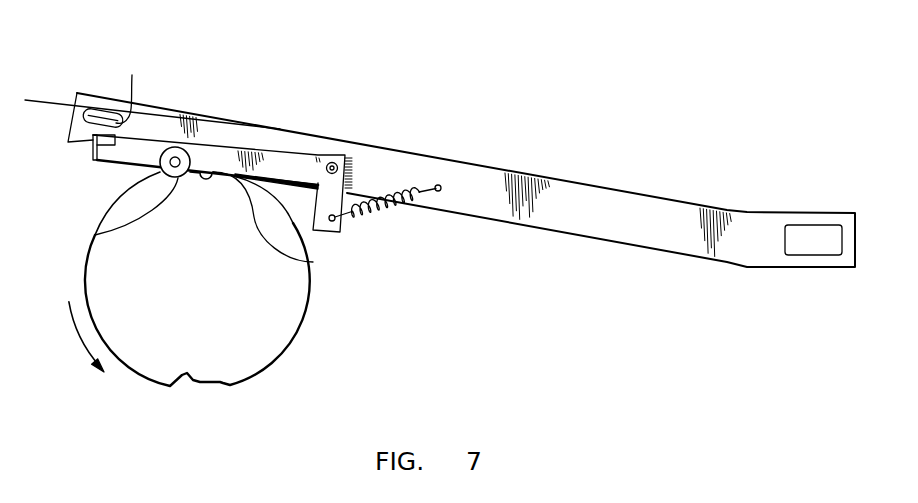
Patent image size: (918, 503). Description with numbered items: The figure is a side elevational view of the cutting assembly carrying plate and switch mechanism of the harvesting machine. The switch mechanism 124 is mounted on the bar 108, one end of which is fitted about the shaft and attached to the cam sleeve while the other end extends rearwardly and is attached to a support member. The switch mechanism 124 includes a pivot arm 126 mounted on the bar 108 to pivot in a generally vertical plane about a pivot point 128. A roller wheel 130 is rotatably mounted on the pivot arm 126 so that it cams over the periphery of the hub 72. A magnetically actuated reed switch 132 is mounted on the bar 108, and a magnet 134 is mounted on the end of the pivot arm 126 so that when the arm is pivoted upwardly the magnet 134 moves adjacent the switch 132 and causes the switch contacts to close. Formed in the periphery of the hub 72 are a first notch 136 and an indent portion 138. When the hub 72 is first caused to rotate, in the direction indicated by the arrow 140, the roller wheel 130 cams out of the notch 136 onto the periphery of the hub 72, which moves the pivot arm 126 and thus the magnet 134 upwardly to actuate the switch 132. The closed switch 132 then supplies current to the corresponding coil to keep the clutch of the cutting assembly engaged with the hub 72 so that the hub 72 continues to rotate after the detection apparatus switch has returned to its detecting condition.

The hub 72 is at (302, 315).
The bar 108 is at (554, 176).
The switch mechanism 124 is at (115, 82).
The pivot arm 126 is at (287, 162).
The pivot point 128 is at (336, 164).
The roller wheel 130 is at (162, 176).
The magnetically actuated reed switch 132 is at (105, 107).
The magnet 134 is at (94, 143).
The first notch 136 is at (313, 262).
The indent portion 138 is at (97, 233).
The arrow 140 is at (76, 328).